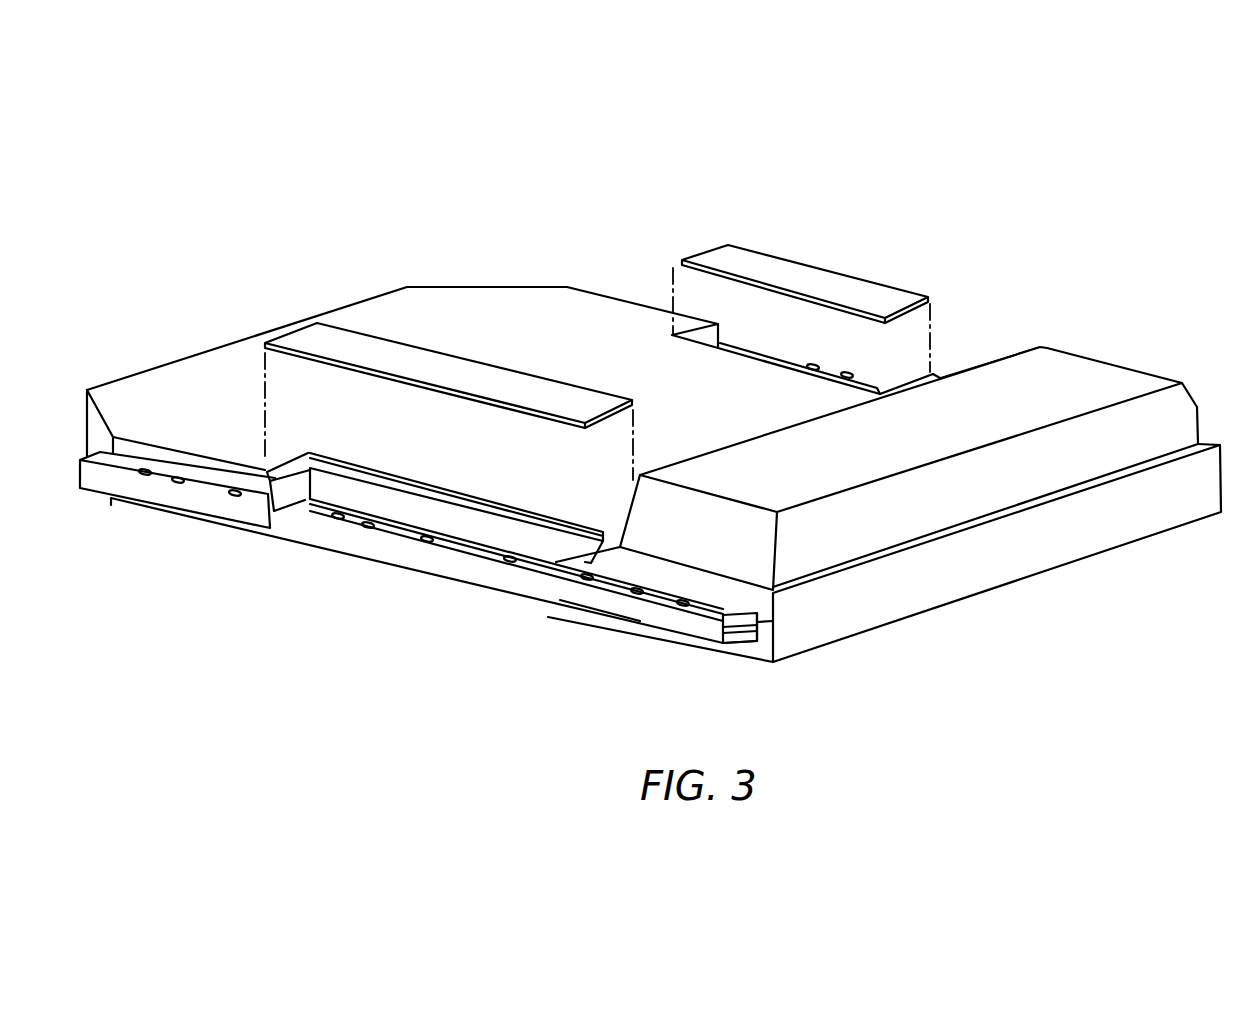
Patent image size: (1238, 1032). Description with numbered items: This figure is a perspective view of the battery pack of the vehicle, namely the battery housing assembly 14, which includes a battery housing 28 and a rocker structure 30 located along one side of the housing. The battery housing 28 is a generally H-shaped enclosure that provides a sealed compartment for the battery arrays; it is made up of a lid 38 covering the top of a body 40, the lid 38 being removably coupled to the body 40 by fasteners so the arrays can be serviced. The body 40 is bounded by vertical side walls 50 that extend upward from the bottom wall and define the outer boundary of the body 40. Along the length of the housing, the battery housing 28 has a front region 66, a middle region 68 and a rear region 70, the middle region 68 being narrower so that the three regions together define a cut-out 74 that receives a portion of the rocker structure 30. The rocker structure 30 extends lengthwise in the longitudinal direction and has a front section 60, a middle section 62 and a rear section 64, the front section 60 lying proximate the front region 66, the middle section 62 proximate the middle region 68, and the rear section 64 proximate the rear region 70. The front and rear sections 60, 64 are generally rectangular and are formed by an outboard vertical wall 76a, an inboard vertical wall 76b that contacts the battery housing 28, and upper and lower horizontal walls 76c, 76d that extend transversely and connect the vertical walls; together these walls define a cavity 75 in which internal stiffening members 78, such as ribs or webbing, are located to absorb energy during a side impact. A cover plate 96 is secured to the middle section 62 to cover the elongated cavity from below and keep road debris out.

The battery housing assembly 14 is at (377, 247).
The battery housing 28 is at (220, 318).
The rocker structure 30 is at (880, 373).
The lid 38 is at (549, 322).
The body 40 is at (160, 363).
The side wall 50 is at (943, 570).
The front section 60 is at (132, 503).
The middle section 62 is at (433, 565).
The rear section 64 is at (590, 615).
The front region 66 is at (440, 323).
The middle region 68 is at (743, 397).
The rear region 70 is at (983, 487).
The cut-out 74 is at (302, 482).
The cavity 75 is at (743, 646).
The outboard vertical wall 76a is at (670, 615).
The inboard vertical wall 76b is at (757, 632).
The upper horizontal wall 76c is at (742, 629).
The lower horizontal wall 76d is at (723, 645).
The internal stiffening member 78 is at (752, 615).
The cover plate 96 is at (312, 333).